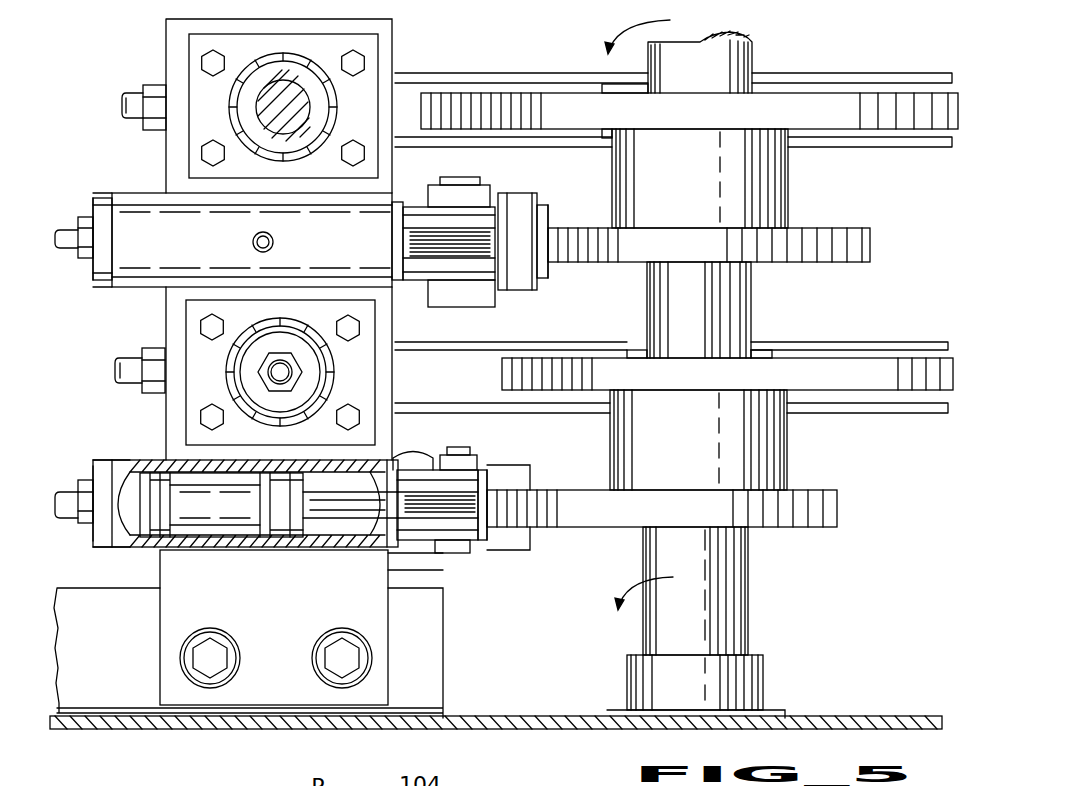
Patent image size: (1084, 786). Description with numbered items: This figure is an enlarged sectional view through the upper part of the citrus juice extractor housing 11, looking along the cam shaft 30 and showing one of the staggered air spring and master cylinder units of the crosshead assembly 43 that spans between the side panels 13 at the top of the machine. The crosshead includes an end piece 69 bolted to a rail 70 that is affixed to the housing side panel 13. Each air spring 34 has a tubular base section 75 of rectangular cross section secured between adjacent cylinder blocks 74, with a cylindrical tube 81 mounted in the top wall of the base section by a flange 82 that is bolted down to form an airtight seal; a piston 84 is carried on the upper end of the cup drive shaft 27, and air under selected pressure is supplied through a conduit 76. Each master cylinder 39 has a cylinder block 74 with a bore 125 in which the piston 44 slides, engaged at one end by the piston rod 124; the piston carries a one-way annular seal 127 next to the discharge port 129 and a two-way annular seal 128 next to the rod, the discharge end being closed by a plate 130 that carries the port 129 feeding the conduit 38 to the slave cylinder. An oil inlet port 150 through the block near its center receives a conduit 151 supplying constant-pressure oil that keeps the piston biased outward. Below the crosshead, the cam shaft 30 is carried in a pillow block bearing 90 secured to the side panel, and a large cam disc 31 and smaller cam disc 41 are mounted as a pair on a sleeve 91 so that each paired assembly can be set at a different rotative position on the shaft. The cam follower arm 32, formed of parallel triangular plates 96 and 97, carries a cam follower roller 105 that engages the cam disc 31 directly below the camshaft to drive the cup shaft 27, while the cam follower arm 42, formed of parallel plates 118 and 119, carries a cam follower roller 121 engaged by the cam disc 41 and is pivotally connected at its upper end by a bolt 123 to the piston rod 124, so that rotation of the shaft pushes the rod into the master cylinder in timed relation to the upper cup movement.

The housing 11 is at (102, 724).
The side panel 13 is at (530, 715).
The cup drive shaft 27 is at (300, 106).
The cam shaft 30 is at (750, 585).
The cam disc 31 is at (692, 123).
The cam follower arm 32 is at (886, 70).
The air spring 34 is at (322, 56).
The conduit 38 is at (67, 228).
The master cylinder 39 is at (117, 290).
The cam disc 41 is at (674, 255).
The cam follower arm 42 is at (493, 190).
The crosshead assembly 43 is at (158, 332).
The piston 44 is at (222, 533).
The end piece 69 is at (258, 655).
The rail 70 is at (443, 645).
The cylinder block 74 is at (168, 251).
The tubular base section 75 is at (166, 35).
The conduit 76 is at (126, 90).
The cylindrical tube 81 is at (229, 118).
The flange 82 is at (370, 172).
The piston 84 is at (336, 386).
The pillow block bearing 90 is at (765, 655).
The sleeve 91 is at (672, 193).
The triangular plate 96 is at (800, 82).
The triangular plate 97 is at (850, 146).
The cam follower roller 105 is at (618, 85).
The plate 118 is at (548, 210).
The plate 119 is at (549, 277).
The cam follower roller 121 is at (507, 248).
The bolt 123 is at (530, 193).
The piston rod 124 is at (403, 242).
The bore 125 is at (318, 540).
The annular seal 127 is at (155, 538).
The annular seal 128 is at (292, 538).
The discharge port 129 is at (92, 522).
The plate 130 is at (106, 195).
The oil inlet port 150 is at (274, 246).
The conduit 151 is at (270, 238).